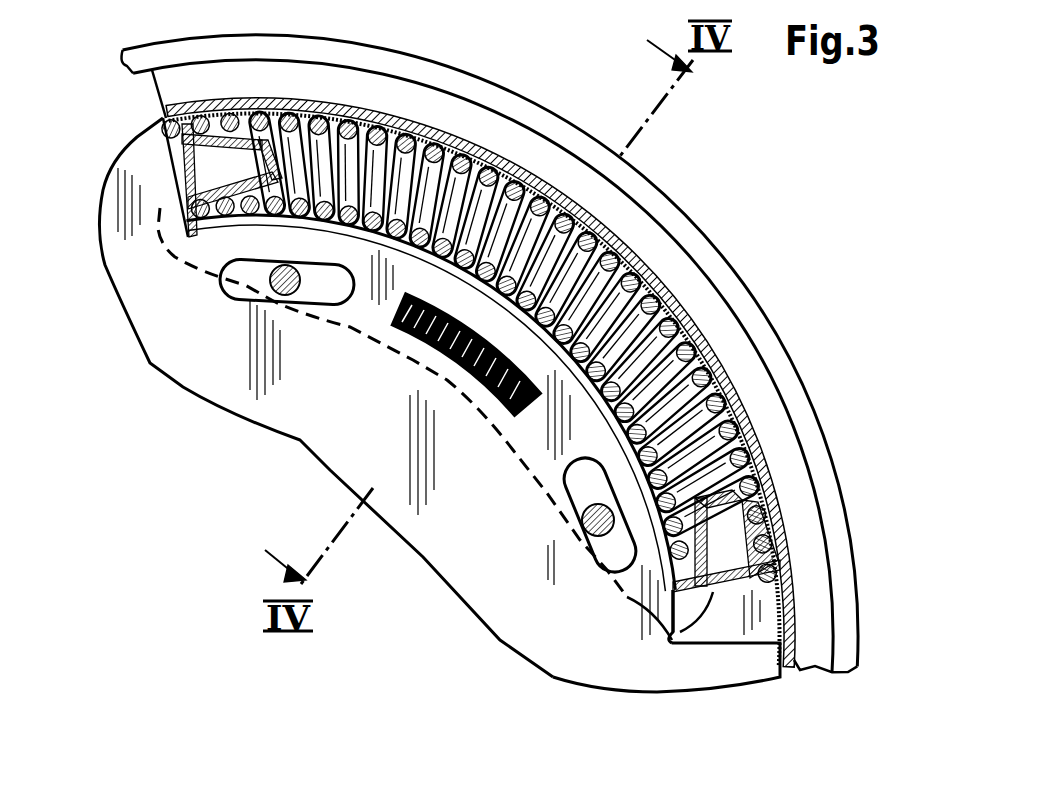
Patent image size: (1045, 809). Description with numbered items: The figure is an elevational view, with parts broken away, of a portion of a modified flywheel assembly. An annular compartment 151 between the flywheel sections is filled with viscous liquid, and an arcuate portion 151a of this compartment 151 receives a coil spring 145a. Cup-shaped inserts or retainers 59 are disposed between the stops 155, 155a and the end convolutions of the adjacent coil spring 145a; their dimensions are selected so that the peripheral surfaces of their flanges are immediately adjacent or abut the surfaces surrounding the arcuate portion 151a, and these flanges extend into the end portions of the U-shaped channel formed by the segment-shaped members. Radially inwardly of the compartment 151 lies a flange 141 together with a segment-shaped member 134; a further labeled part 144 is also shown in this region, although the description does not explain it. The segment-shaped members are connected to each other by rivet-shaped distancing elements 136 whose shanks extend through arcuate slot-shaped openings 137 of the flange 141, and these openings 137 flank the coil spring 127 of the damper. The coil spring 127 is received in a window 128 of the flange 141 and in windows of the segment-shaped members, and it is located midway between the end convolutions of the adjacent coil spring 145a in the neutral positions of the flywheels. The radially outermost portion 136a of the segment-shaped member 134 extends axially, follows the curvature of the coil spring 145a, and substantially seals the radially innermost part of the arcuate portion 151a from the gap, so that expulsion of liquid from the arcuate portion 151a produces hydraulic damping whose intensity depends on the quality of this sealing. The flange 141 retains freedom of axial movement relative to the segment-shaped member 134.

The cup-shaped inserts or retainers 59 is at (182, 130).
The coil spring 127 is at (420, 300).
The window 128 is at (537, 413).
The segment-shaped member 134 is at (335, 330).
The rivet-shaped distancing elements 136 is at (250, 288).
The radially outermost portion of the segment-shaped member 136a is at (474, 190).
The arcuate slot-shaped openings 137 is at (332, 290).
The flange 141 is at (565, 665).
The brake shoe flange 144 is at (733, 675).
The coil spring 145a is at (693, 310).
The annular compartment 151 is at (582, 248).
The arcuate portion of the annular compartment 151a is at (582, 248).
The stop 155 is at (733, 622).
The stop 155a is at (733, 622).